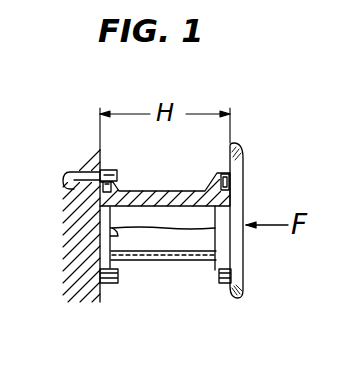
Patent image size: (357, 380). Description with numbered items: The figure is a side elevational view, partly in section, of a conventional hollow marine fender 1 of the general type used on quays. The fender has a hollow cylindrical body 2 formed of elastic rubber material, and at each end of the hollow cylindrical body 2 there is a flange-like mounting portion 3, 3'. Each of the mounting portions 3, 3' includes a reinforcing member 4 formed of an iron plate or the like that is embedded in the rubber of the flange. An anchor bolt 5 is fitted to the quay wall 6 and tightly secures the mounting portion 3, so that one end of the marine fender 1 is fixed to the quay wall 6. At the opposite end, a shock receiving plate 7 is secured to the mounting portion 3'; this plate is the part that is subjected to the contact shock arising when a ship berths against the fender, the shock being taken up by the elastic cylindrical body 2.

The hollow marine fender 1 is at (186, 184).
The hollow cylindrical body 2 is at (141, 191).
The flange like mounting portion 3 is at (113, 298).
The flange like mounting portion 3' is at (203, 296).
The reinforcing member 4 is at (88, 196).
The anchor bolt 5 is at (62, 175).
The quay wall 6 is at (90, 155).
The shock receiving plate 7 is at (227, 291).